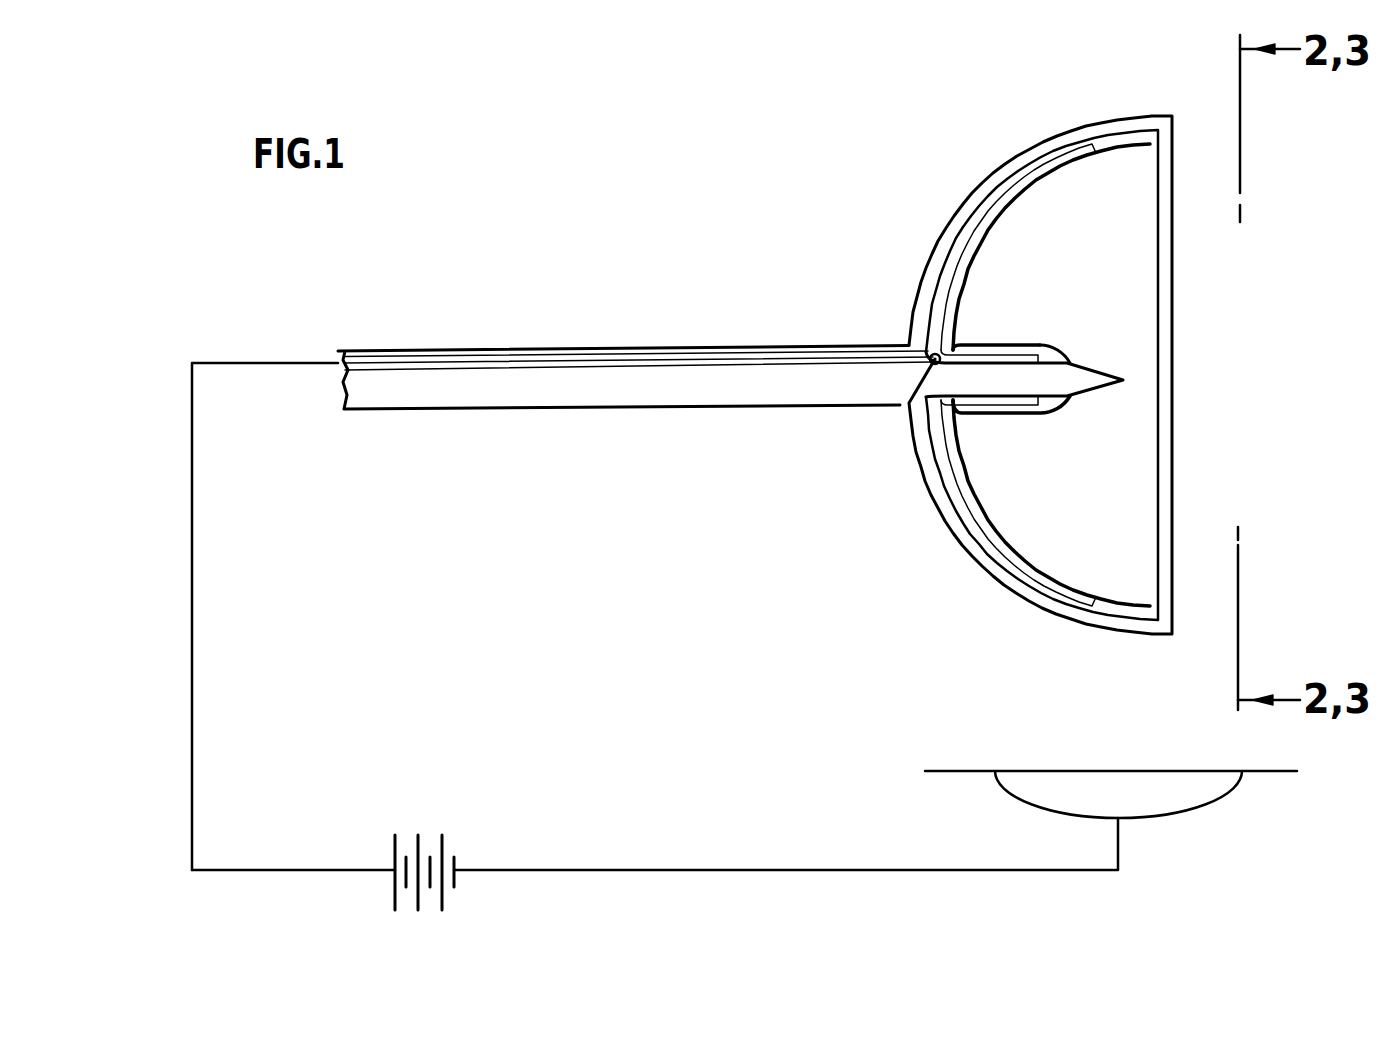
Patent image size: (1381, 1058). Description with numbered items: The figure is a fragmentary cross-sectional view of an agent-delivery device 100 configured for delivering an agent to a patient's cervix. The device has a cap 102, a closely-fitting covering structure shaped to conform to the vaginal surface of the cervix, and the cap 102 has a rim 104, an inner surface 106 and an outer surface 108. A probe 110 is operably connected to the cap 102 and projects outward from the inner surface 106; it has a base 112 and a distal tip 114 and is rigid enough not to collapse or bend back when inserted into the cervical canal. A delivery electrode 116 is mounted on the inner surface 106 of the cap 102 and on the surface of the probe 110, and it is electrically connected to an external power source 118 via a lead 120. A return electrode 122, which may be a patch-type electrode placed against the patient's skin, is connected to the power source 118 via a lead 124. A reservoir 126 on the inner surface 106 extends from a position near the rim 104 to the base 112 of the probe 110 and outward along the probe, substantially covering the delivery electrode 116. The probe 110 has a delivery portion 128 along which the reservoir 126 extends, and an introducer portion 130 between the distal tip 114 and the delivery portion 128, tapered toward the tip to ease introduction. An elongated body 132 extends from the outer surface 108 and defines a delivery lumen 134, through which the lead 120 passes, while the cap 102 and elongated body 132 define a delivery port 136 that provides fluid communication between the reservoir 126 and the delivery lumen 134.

The agent-delivery device 100 is at (712, 142).
The cap 102 is at (962, 205).
The rim 104 is at (1173, 262).
The inner surface 106 is at (1125, 150).
The outer surface 108 is at (922, 488).
The probe 110 is at (1100, 398).
The base 112 is at (954, 416).
The distal tip 114 is at (1125, 380).
The delivery electrode 116 is at (932, 272).
The power source 118 is at (418, 840).
The lead 120 is at (193, 605).
The return electrode 122 is at (1178, 808).
The lead 124 is at (748, 870).
The reservoir 126 is at (1030, 545).
The delivery portion 128 is at (988, 345).
The introducer portion 130 is at (1082, 360).
The elongated body 132 is at (583, 410).
The delivery lumen 134 is at (490, 362).
The delivery port 136 is at (903, 406).